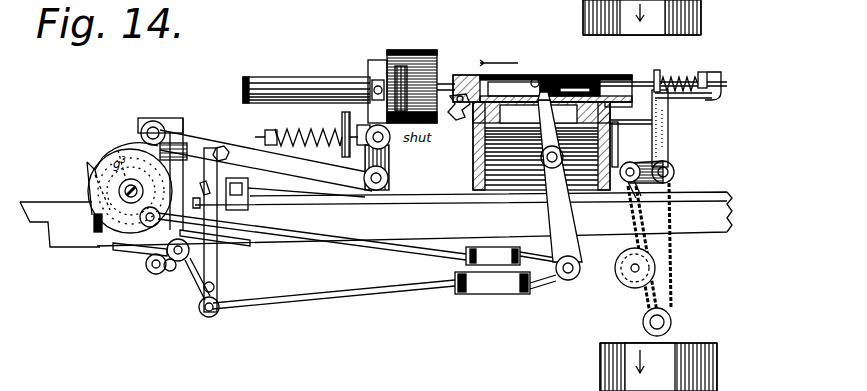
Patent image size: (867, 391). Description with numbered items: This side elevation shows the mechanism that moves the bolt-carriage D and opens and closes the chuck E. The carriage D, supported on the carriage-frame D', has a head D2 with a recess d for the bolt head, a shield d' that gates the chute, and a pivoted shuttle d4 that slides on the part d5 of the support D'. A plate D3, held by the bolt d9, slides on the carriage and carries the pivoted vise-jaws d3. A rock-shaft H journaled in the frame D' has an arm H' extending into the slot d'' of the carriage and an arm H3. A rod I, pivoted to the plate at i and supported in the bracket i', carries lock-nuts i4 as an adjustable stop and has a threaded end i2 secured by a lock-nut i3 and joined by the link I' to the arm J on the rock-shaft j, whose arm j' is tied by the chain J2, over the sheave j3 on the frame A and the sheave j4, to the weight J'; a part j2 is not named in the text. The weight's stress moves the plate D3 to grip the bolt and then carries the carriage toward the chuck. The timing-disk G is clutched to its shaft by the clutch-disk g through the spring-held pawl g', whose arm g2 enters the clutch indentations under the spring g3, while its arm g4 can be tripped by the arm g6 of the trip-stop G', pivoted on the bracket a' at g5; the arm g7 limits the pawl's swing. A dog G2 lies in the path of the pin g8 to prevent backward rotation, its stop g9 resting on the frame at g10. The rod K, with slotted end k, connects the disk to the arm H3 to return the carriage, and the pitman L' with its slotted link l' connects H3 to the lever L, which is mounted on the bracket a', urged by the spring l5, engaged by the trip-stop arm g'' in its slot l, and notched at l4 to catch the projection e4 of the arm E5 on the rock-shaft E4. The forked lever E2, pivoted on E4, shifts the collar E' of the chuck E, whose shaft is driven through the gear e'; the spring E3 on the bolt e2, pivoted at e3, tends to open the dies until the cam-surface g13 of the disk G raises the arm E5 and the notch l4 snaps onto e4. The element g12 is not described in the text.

The frame rail A is at (414, 219).
The timing-disk G is at (102, 191).
The trip-stop G' is at (154, 280).
The dog G2 is at (176, 118).
The clutch-disk g is at (81, 228).
The spring-held pawl g' is at (76, 174).
The pawl arm g2 is at (114, 238).
The pawl spring g3 is at (60, 224).
The second pawl arm g4 is at (92, 240).
The trip-stop pivot g5 is at (182, 262).
The trip-stop arm g6 is at (119, 254).
The pawl arm g7 is at (101, 152).
The pin g8 is at (135, 142).
The stop g9 is at (172, 176).
The frame contact point g10 is at (143, 188).
The trip-stop arm g'' is at (184, 308).
The pin g12 is at (203, 183).
The cam-surface g13 is at (88, 162).
The slot l is at (214, 295).
The slotted link l' is at (501, 308).
The notch l4 is at (212, 146).
The spring l5 is at (248, 244).
The lever L is at (215, 247).
The pitman-rod L' is at (384, 298).
The pitman-rod K is at (298, 238).
The slotted end k is at (548, 290).
The bracket a' is at (237, 201).
The gear e' is at (306, 79).
The bolt e2 is at (310, 148).
The pivot e3 is at (343, 158).
The projection e4 is at (224, 149).
The chuck E is at (412, 71).
The collar E' is at (370, 76).
The forked lever E2 is at (388, 148).
The spring E3 is at (298, 130).
The rock-shaft E4 is at (389, 178).
The arm E5 is at (340, 198).
The recess d is at (453, 88).
The shield d' is at (499, 53).
The vise-jaws d3 is at (505, 80).
The shuttle d4 is at (448, 124).
The carriage-support part d5 is at (463, 117).
The bolt d9 is at (586, 80).
The slot d'' is at (538, 114).
The bolt-carriage D is at (542, 78).
The carriage-frame D' is at (562, 146).
The head D2 is at (466, 75).
The sliding plate D3 is at (602, 80).
The pivot i is at (629, 67).
The bracket i' is at (658, 69).
The rod end i2 is at (722, 75).
The lock-nut i3 is at (712, 72).
The lock-nuts i4 is at (674, 77).
The rod I is at (694, 69).
The link I' is at (683, 107).
The rock-shaft H is at (541, 186).
The arm H' is at (462, 154).
The arm H3 is at (525, 205).
The arm J is at (671, 128).
The weight J' is at (658, 367).
The chain J2 is at (655, 255).
The rock-shaft j is at (673, 172).
The arm j' is at (632, 189).
The belt j2 is at (618, 250).
The sheave j3 is at (630, 272).
The sheave j4 is at (643, 320).